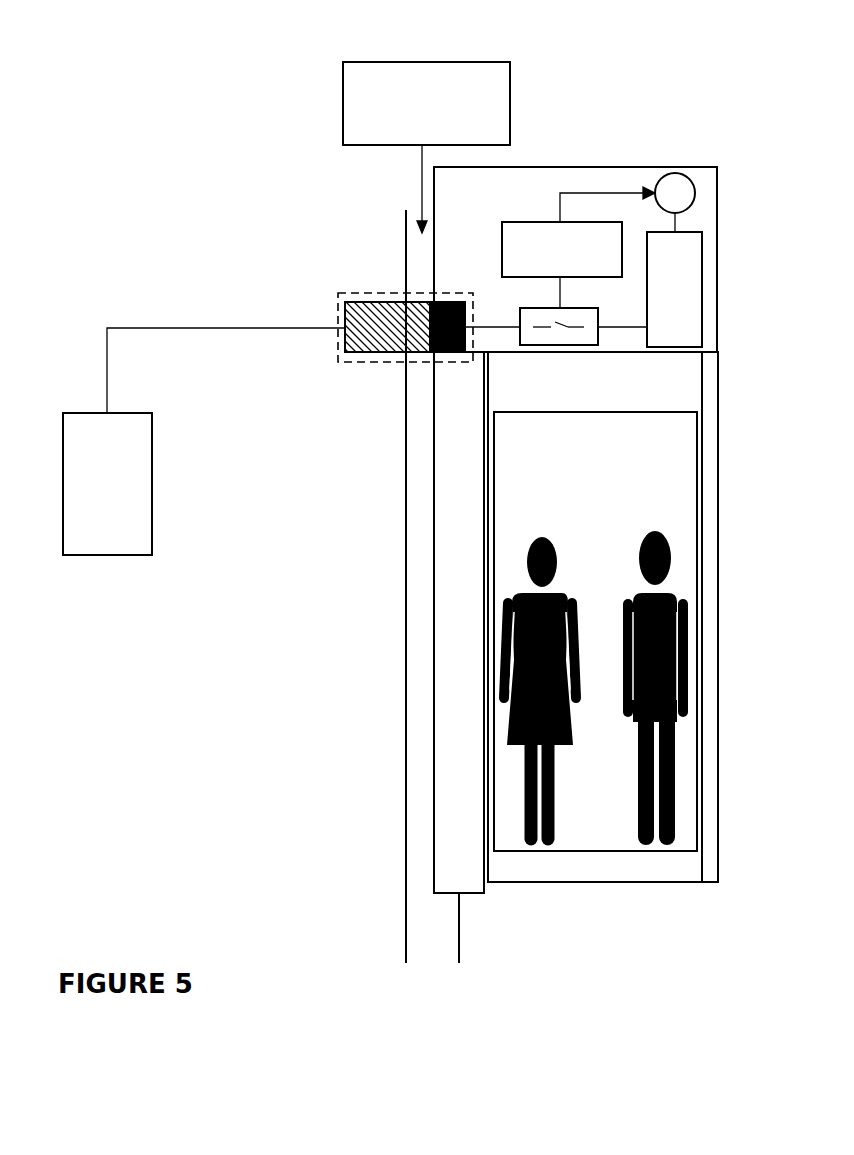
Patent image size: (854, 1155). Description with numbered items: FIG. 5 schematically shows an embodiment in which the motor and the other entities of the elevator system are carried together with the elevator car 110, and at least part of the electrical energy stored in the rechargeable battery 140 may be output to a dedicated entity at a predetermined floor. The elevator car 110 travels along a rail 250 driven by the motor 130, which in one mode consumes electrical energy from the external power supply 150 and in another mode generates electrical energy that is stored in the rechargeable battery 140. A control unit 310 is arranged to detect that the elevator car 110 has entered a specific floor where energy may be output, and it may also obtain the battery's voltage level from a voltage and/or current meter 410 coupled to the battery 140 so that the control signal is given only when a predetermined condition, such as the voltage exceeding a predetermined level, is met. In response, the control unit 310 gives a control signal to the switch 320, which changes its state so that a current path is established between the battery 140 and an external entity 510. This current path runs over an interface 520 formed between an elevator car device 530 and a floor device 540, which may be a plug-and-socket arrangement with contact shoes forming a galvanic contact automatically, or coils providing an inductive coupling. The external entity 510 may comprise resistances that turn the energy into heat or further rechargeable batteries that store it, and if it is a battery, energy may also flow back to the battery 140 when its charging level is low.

The external power supply 150 is at (468, 62).
The voltage and/or current meter 410 is at (678, 172).
The control unit 310 is at (542, 222).
The rechargeable battery 140 is at (702, 250).
The switch 320 is at (560, 345).
The floor device 540 is at (390, 302).
The elevator car device 530 is at (450, 302).
The interface 520 is at (338, 362).
The external entity 510 is at (83, 413).
The rail 250 is at (405, 672).
The motor 130 is at (434, 532).
The elevator car 110 is at (612, 882).